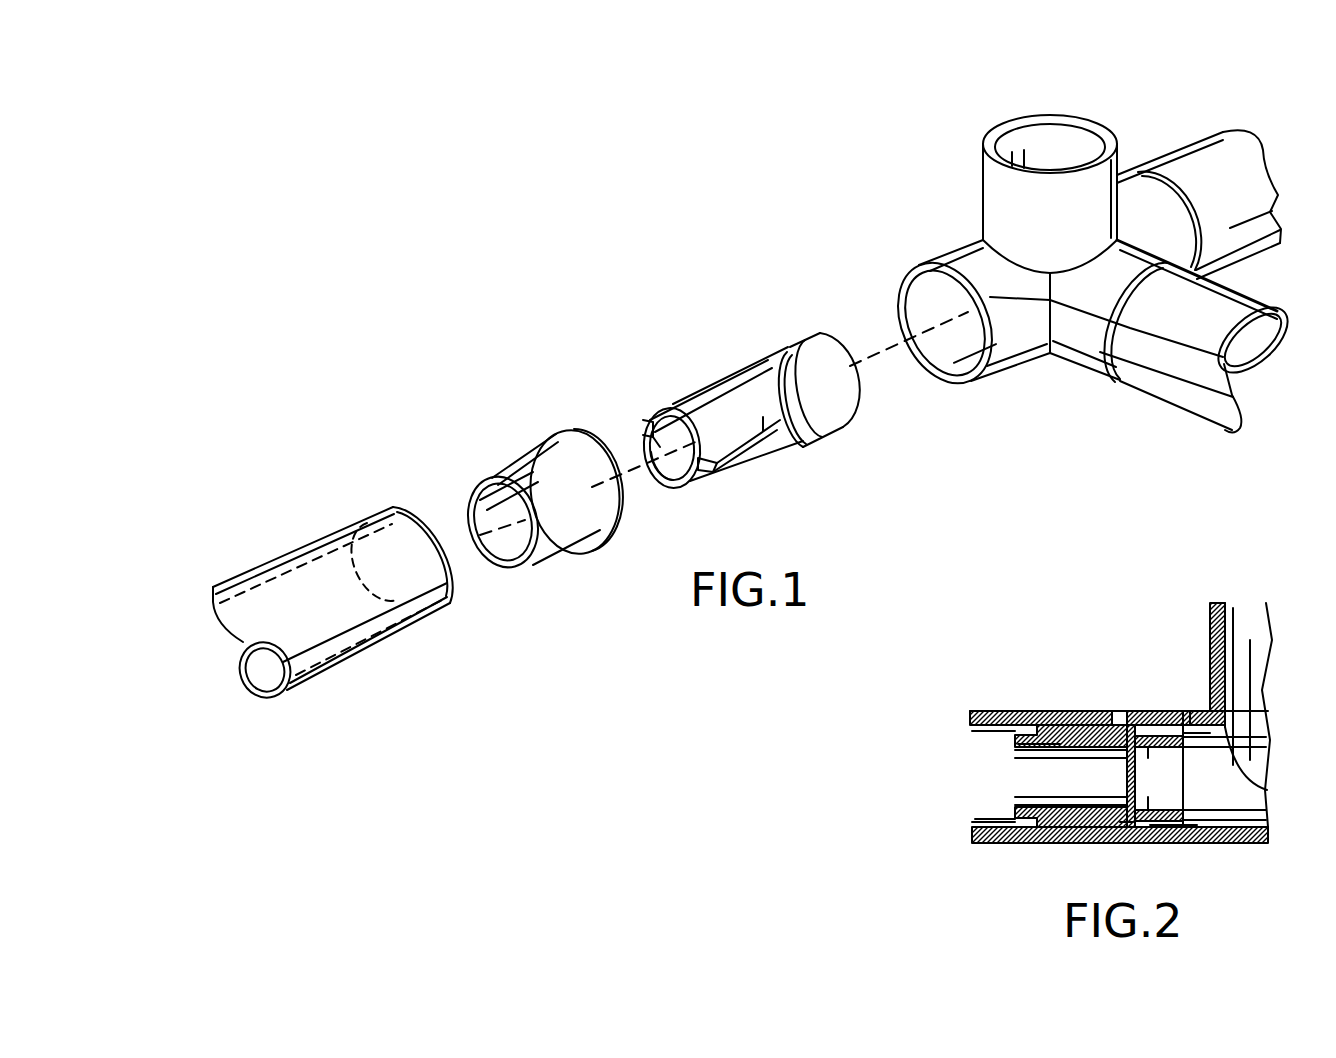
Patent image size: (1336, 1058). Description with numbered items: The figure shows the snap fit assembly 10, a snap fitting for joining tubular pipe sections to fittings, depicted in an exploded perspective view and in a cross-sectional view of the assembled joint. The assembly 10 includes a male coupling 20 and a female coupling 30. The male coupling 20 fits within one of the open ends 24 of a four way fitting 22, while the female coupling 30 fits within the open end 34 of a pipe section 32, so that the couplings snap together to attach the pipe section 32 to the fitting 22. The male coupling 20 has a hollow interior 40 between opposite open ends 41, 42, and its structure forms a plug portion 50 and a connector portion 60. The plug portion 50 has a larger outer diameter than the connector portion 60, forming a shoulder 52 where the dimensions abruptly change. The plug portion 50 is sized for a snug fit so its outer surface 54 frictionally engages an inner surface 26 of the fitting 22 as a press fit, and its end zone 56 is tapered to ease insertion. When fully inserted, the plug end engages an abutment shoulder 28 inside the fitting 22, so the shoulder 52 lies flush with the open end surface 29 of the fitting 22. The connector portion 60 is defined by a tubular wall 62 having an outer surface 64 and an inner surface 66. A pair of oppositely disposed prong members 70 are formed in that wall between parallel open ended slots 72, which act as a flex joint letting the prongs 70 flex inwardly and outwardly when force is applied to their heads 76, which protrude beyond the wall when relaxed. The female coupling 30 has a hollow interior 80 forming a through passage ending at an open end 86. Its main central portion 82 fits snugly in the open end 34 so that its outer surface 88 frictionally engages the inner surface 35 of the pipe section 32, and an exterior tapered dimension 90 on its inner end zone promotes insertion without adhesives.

In FIG. 1, the snap fit assembly 10 is at (836, 192).
In FIG. 2, the snap fit assembly 10 is at (1150, 673).
In FIG. 1, the male coupling 20 is at (787, 342).
In FIG. 2, the male coupling 20 is at (1182, 790).
In FIG. 1, the 4-way fitting 22 is at (992, 208).
In FIG. 2, the 4-way fitting 22 is at (1200, 645).
In FIG. 1, the open ends 24 is at (1035, 135).
In FIG. 1, the inner surface 26 is at (960, 355).
In FIG. 2, the inner surface 26 is at (1176, 834).
In FIG. 2, the abutment shoulder 28 is at (1188, 714).
In FIG. 1, the open end surface 29 is at (1094, 128).
In FIG. 1, the female coupling 30 is at (513, 460).
In FIG. 2, the female coupling 30 is at (1065, 712).
In FIG. 1, the pipe section 32 is at (282, 545).
In FIG. 2, the pipe section 32 is at (995, 710).
In FIG. 1, the open end 34 is at (405, 510).
In FIG. 1, the inner surface 35 is at (262, 665).
In FIG. 2, the hollow interior 40 is at (1116, 799).
In FIG. 2, the open end 41 is at (1150, 802).
In FIG. 1, the open end 42 is at (660, 480).
In FIG. 2, the open end 42 is at (1010, 820).
In FIG. 1, the plug portion 50 is at (814, 446).
In FIG. 2, the plug portion 50 is at (1200, 735).
In FIG. 1, the shoulder 52 is at (792, 452).
In FIG. 1, the outer surface 54 is at (848, 427).
In FIG. 2, the outer surface 54 is at (1130, 822).
In FIG. 1, the end zone 56 is at (816, 331).
In FIG. 1, the connector portion 60 is at (690, 397).
In FIG. 2, the connector portion 60 is at (1040, 752).
In FIG. 1, the tubular wall 62 is at (720, 393).
In FIG. 1, the outer surface 64 is at (690, 407).
In FIG. 1, the inner surface 66 is at (685, 476).
In FIG. 1, the prong members 70 is at (640, 452).
In FIG. 2, the prong members 70 is at (1060, 757).
In FIG. 1, the slots 72 is at (752, 432).
In FIG. 1, the heads 76 is at (716, 472).
In FIG. 2, the heads 76 is at (1018, 733).
In FIG. 1, the hollow interior 80 is at (506, 555).
In FIG. 1, the main central portion 82 is at (576, 548).
In FIG. 1, the open end 86 is at (470, 510).
In FIG. 1, the outer surface 88 is at (546, 566).
In FIG. 1, the exterior tapered dimension 90 is at (565, 490).